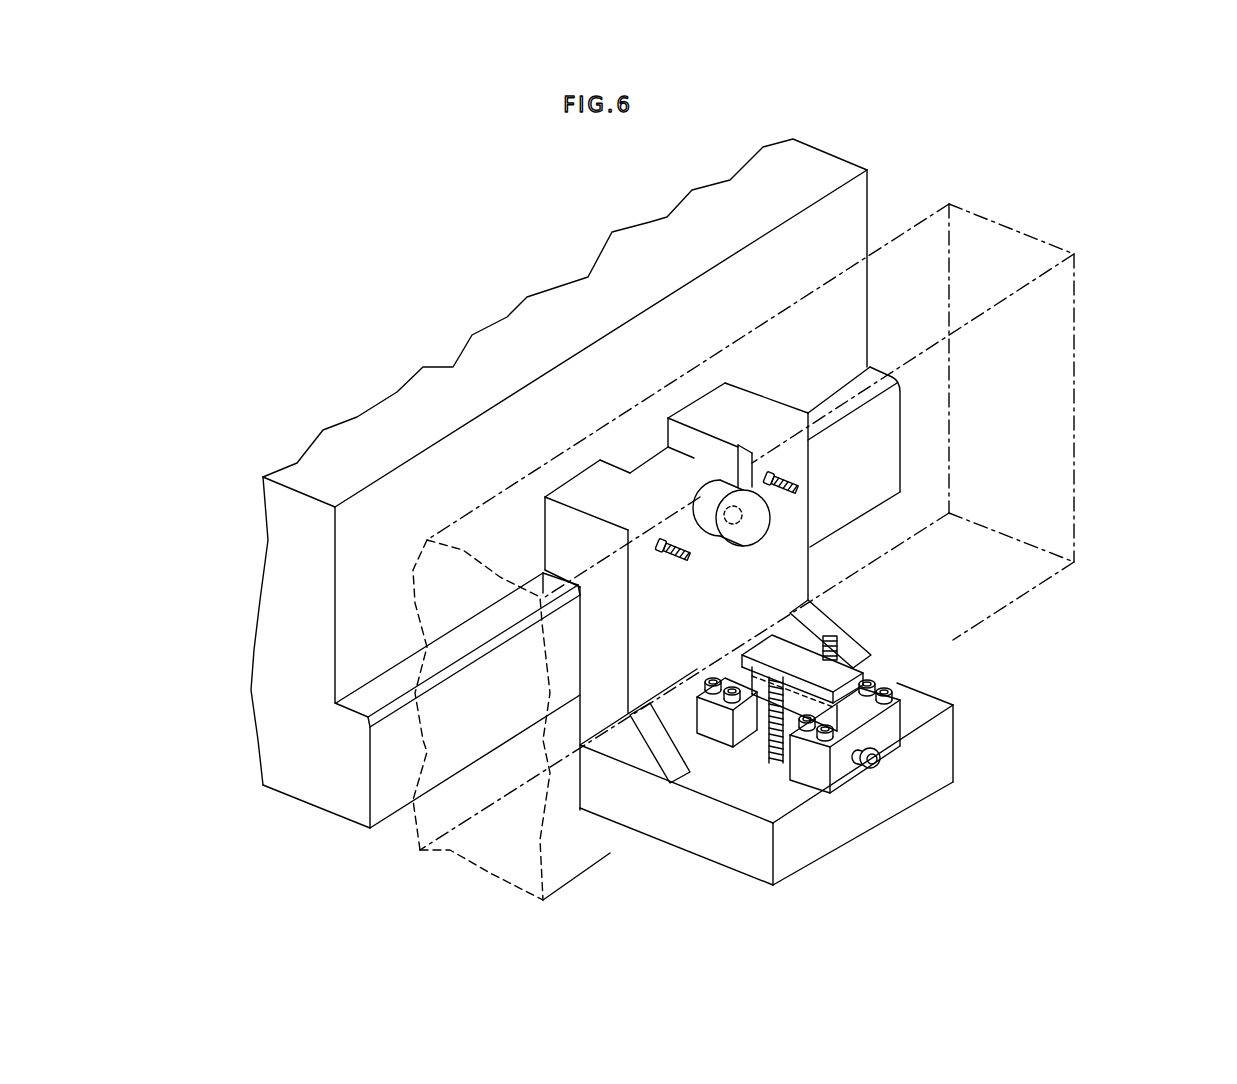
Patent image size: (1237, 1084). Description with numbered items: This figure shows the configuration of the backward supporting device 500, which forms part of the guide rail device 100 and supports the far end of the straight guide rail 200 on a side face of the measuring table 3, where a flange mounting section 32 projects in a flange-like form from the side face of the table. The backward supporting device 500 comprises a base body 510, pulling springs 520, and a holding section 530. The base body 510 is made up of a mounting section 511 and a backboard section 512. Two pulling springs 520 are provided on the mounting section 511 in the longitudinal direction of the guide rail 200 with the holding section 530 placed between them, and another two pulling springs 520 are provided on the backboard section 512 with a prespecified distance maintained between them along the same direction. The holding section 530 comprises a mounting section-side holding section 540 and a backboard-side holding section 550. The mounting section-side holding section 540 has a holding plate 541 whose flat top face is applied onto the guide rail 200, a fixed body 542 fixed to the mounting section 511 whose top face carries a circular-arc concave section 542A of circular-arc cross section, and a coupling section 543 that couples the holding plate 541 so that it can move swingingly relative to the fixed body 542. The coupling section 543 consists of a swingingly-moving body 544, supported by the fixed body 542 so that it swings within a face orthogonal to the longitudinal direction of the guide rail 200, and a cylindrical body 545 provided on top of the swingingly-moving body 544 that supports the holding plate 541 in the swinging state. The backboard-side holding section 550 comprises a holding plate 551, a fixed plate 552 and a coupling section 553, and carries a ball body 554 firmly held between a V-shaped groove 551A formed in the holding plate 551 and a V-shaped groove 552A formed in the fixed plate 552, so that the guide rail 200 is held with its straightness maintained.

The measuring table 3 is at (823, 155).
The flange mounting section 32 is at (378, 697).
The guide rail device 100 is at (1026, 207).
The guide rail 200 is at (1037, 367).
The backward supporting device 500 is at (990, 693).
The base body 510 is at (340, 852).
The mounting section 511 is at (690, 835).
The backboard section 512 is at (610, 705).
The pulling spring 520 is at (800, 490).
The holding section 530 is at (957, 538).
The mounting section-side holding section 540 is at (871, 652).
The holding plate 541 is at (770, 647).
The fixed body 542 is at (765, 735).
The circular-arc concave section 542A is at (758, 740).
The coupling section 543 is at (886, 668).
The swingingly-moving body 544 is at (790, 728).
The cylindrical body 545 is at (867, 700).
The backboard-side holding section 550 is at (773, 539).
The holding plate 551 is at (742, 547).
The V-shaped groove 551A is at (752, 477).
The fixed plate 552 is at (707, 488).
The V-shaped groove 552A is at (707, 523).
The coupling section 553 is at (733, 487).
The ball body 554 is at (668, 440).